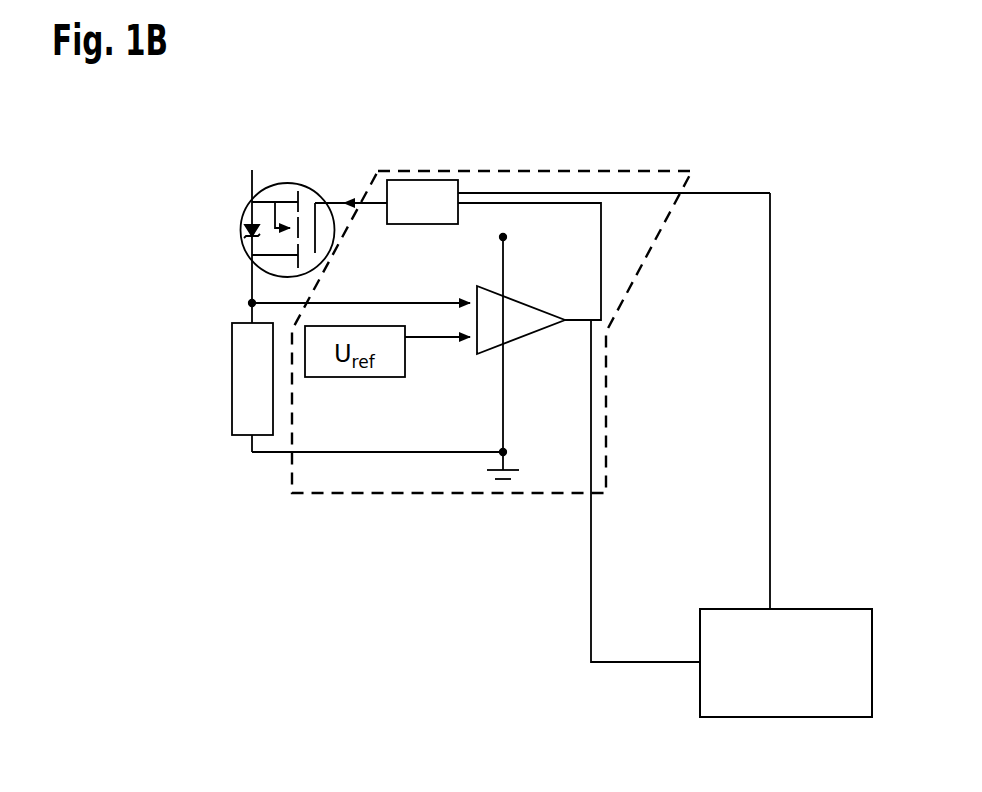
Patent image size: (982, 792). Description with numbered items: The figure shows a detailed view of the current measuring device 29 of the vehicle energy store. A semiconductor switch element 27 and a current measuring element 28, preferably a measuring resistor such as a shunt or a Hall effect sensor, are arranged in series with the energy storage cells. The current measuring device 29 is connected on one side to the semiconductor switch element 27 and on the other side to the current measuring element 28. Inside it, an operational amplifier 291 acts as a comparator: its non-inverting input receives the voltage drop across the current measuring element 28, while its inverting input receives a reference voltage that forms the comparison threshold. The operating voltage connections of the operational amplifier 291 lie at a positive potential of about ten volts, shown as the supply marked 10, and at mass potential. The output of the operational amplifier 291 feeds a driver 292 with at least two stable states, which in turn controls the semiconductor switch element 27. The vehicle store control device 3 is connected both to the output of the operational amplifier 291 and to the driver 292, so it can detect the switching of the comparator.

The semiconductor switch element 27 is at (290, 183).
The current measuring element 28 is at (232, 345).
The current measuring device 29 is at (660, 233).
The operational amplifier 291 is at (548, 312).
The driver 292 is at (430, 178).
The vehicle store control device 3 is at (795, 575).
The supply voltage terminal 10 is at (535, 239).